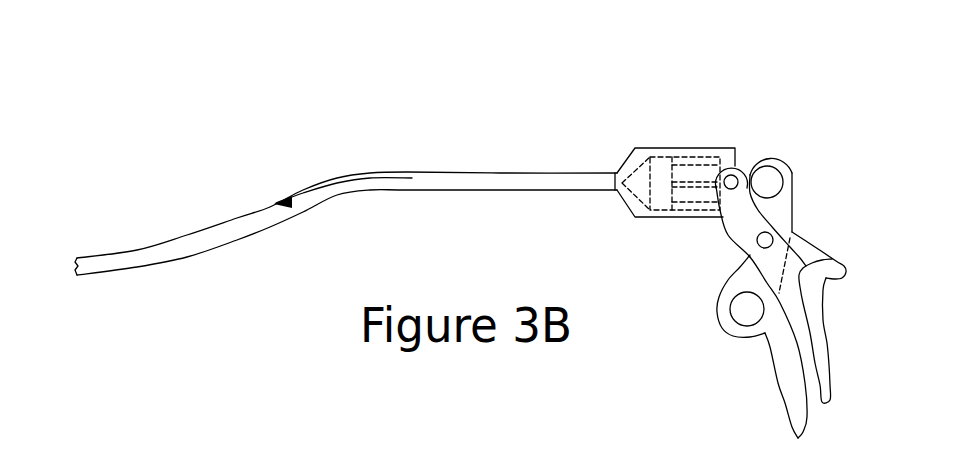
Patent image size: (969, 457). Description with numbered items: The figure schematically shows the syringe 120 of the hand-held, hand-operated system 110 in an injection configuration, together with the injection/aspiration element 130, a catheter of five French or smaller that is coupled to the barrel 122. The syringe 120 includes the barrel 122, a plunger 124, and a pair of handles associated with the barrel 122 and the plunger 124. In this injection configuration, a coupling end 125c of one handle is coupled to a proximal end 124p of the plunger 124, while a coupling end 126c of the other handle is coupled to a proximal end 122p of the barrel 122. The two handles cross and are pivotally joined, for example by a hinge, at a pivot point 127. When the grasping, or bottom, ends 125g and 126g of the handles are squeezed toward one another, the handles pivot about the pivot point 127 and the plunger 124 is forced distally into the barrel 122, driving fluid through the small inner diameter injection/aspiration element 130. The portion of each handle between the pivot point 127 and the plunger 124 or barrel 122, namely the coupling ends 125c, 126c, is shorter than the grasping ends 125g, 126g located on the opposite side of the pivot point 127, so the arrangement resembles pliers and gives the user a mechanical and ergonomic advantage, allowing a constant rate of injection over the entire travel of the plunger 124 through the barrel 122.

The system 110 is at (134, 138).
The syringe 120 is at (685, 122).
The barrel 122 is at (634, 219).
The proximal end of barrel 122p is at (741, 162).
The plunger 124 is at (700, 176).
The proximal end of plunger 124p is at (768, 157).
The coupling end of handle 125c is at (784, 207).
The grasping end of handle 125g is at (775, 366).
The coupling end of handle 126c is at (724, 200).
The grasping end of handle 126g is at (812, 343).
The pivot point 127 is at (773, 240).
The injection/aspiration element 130 is at (511, 191).